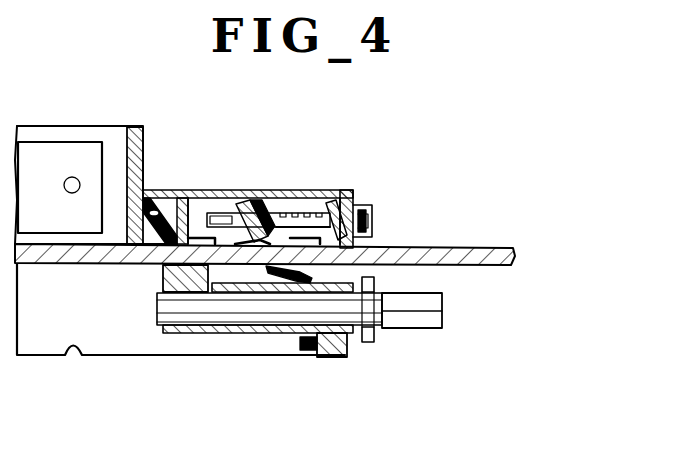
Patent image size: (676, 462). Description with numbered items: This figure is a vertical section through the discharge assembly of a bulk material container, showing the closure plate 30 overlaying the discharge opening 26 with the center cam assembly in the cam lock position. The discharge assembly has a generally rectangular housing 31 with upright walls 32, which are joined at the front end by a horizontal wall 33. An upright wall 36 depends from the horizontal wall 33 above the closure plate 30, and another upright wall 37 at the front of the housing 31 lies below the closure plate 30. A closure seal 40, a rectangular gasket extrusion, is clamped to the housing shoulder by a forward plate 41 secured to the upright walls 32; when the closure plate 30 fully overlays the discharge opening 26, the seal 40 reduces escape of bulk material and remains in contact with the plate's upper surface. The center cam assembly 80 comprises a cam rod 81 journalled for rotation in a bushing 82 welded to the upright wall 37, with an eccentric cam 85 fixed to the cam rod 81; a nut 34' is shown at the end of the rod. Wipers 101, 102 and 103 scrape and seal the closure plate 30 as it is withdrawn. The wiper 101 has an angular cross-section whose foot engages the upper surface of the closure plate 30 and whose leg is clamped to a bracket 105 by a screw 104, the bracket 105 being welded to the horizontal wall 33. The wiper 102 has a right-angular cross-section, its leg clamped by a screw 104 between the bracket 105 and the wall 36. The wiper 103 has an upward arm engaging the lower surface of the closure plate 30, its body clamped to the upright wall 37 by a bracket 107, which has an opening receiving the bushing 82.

The discharge opening 26 is at (70, 356).
The closure plate 30 is at (494, 249).
The housing 31 is at (155, 133).
The upright walls 32 is at (146, 165).
The horizontal wall 33 is at (210, 192).
The nut 34' is at (381, 332).
The upright wall 36 is at (361, 210).
The upright wall 37 is at (334, 358).
The closure seal 40 is at (163, 200).
The forward plate 41 is at (137, 140).
The center cam assembly 80 is at (405, 330).
The cam rod 81 is at (220, 320).
The bushing 82 is at (257, 334).
The eccentric cam 85 is at (167, 337).
The wiper 101 is at (262, 208).
The wiper 102 is at (350, 208).
The wiper 103 is at (343, 253).
The screw 104 is at (372, 223).
The bracket 105 is at (293, 200).
The bracket 107 is at (303, 351).